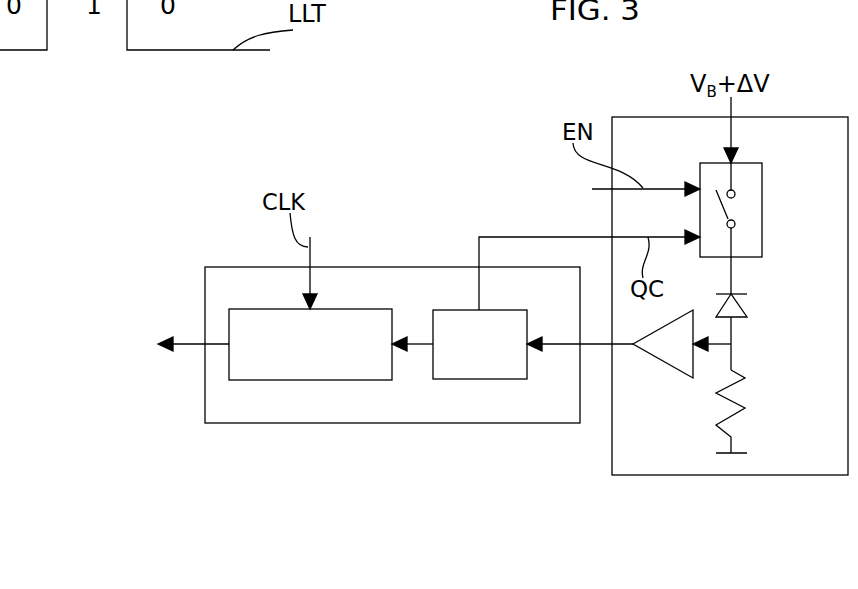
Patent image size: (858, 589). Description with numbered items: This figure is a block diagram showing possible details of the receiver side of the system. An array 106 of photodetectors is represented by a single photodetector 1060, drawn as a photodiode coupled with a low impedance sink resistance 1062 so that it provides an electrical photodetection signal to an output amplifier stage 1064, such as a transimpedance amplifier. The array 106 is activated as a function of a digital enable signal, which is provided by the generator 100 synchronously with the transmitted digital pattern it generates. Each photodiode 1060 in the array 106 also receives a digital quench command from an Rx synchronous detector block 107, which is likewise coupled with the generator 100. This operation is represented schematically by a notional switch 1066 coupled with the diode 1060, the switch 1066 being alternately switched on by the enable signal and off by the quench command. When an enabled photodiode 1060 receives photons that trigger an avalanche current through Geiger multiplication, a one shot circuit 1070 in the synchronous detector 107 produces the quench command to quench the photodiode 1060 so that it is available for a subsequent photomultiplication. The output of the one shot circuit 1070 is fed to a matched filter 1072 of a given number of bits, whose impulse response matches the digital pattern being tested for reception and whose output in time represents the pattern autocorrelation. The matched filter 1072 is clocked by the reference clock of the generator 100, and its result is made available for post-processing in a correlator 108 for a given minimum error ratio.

The generator 100 is at (565, 183).
The array 106 is at (732, 488).
The Rx synchronous detector block 107 is at (403, 412).
The correlator 108 is at (172, 346).
The photodetector 1060 is at (753, 320).
The sink resistance 1062 is at (733, 397).
The output amplifier stage 1064 is at (668, 352).
The switch 1066 is at (750, 215).
The one shot circuit 1070 is at (488, 380).
The matched filter 1072 is at (307, 380).